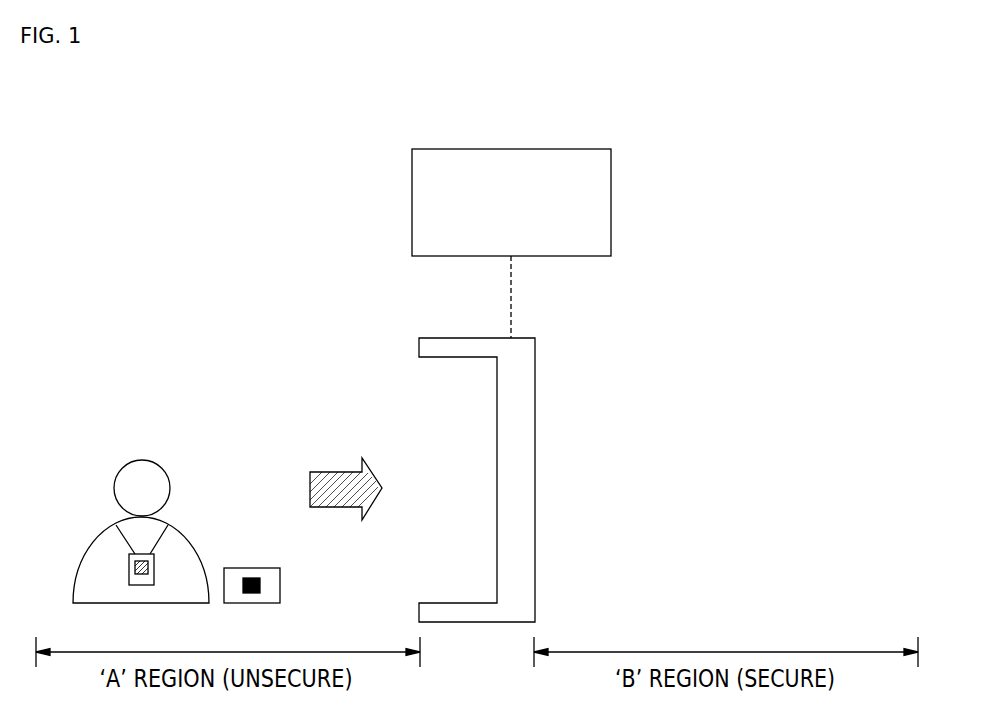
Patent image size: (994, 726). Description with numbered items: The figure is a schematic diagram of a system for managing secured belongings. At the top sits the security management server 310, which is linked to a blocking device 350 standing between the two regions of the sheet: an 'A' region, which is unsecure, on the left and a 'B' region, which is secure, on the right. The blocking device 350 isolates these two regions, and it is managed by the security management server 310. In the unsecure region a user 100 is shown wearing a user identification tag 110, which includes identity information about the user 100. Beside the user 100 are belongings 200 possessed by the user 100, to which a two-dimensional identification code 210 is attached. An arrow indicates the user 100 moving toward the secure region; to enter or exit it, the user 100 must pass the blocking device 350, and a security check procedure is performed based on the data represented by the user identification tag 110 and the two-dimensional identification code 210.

The user 100 is at (141, 428).
The user identification tag 110 is at (129, 568).
The belongings 200 is at (254, 542).
The 2D identification code 210 is at (255, 588).
The security management server 310 is at (512, 149).
The blocking device 350 is at (477, 622).